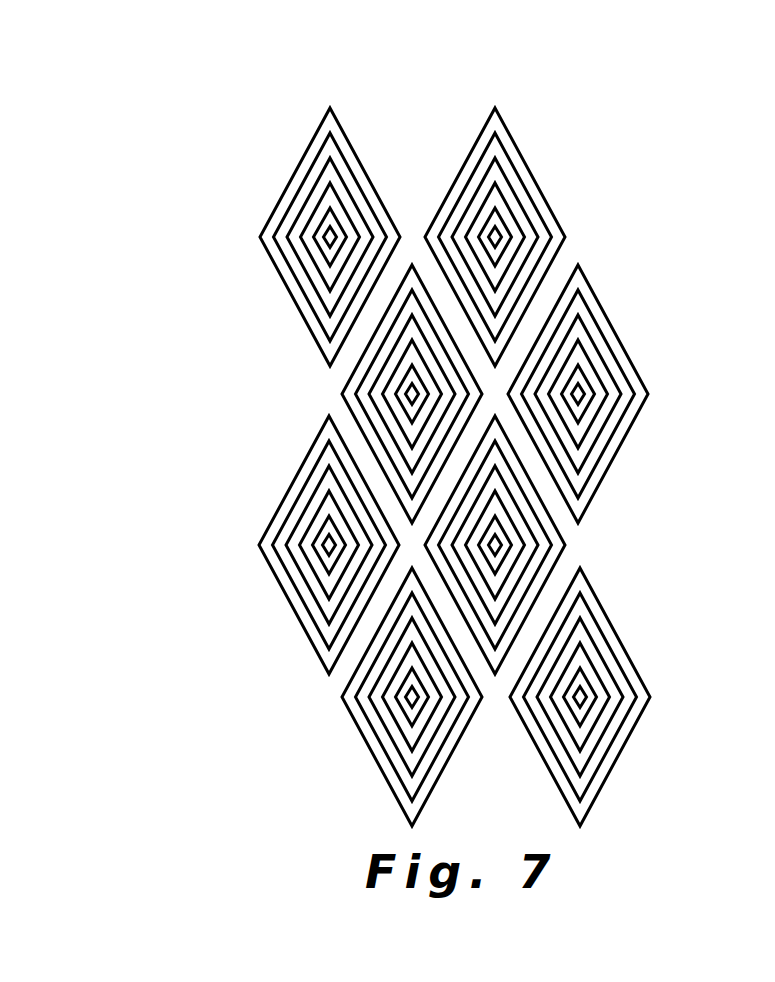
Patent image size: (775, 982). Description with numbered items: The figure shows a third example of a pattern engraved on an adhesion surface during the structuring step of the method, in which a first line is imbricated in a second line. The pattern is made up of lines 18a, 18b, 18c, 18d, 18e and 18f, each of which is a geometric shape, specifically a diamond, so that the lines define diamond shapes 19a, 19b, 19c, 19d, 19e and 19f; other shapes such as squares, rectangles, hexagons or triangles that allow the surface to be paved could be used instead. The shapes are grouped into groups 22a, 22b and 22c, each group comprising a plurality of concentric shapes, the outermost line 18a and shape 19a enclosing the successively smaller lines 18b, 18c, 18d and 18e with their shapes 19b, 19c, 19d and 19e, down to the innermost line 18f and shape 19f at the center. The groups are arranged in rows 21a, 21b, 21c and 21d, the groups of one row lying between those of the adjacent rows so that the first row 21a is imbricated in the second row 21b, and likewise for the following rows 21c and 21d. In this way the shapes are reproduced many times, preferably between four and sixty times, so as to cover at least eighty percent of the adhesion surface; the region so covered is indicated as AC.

The line 18a is at (386, 195).
The geometric shape 19a is at (341, 128).
The line 18b is at (409, 202).
The geometric shape 19b is at (336, 143).
The line 18c is at (241, 237).
The geometric shape 19c is at (290, 242).
The line 18d is at (241, 258).
The geometric shape 19d is at (311, 265).
The line 18e is at (229, 233).
The geometric shape 19e is at (313, 235).
The line 18f is at (242, 202).
The geometric shape 19f is at (323, 229).
The first row 21a is at (458, 177).
The second row 21b is at (477, 403).
The row 21c is at (433, 560).
The row 21d is at (438, 778).
The group 22a is at (313, 137).
The group 22b is at (549, 172).
The group 22c is at (630, 320).
The active area of electrode array AC is at (650, 208).